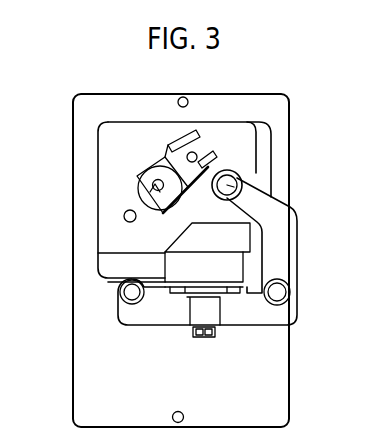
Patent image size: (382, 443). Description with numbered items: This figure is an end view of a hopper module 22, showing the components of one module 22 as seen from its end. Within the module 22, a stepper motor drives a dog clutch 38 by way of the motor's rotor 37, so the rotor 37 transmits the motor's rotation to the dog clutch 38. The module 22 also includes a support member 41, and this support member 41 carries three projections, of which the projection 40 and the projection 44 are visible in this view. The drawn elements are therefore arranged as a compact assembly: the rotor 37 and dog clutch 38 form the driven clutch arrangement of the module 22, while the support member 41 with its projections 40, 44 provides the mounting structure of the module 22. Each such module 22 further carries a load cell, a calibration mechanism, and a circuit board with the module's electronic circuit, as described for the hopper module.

The module 22 is at (250, 84).
The rotor 37 is at (152, 185).
The dog clutch 38 is at (170, 146).
The projection 40 is at (241, 177).
The support member 41 is at (272, 318).
The projection 44 is at (132, 296).